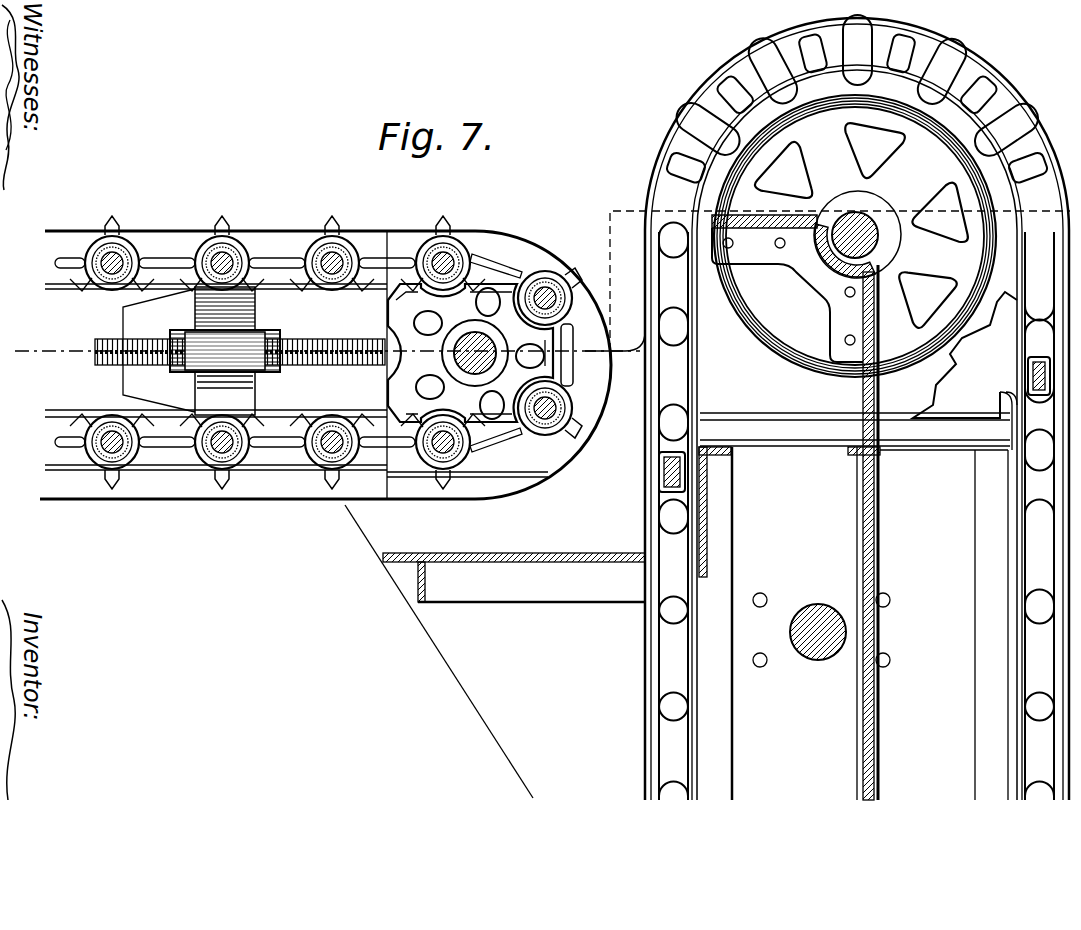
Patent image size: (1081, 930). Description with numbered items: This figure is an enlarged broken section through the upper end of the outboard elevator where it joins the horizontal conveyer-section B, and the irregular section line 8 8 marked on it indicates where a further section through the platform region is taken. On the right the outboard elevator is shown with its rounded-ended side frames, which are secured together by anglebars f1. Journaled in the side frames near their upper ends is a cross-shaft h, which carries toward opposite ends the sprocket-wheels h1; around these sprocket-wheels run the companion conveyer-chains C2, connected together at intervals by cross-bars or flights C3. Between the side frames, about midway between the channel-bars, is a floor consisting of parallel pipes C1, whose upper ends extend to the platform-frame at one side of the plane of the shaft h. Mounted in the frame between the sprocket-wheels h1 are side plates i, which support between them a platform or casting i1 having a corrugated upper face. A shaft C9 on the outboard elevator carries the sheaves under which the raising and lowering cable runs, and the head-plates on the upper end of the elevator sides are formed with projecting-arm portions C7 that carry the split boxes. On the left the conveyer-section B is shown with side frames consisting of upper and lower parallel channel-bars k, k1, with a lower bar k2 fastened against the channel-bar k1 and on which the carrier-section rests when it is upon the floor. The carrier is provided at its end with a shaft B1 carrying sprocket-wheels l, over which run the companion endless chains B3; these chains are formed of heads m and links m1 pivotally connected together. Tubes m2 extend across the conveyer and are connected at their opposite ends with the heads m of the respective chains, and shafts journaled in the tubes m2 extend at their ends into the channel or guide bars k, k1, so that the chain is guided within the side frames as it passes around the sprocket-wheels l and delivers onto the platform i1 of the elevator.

The section line 8 8 is at (35, 325).
The conveyer-section B is at (307, 372).
The shaft B1 is at (478, 338).
The endless chains B3 is at (282, 442).
The upper channel-bar k is at (182, 228).
The lower channel-bar k1 is at (167, 458).
The lower bar k2 is at (88, 470).
The heads m is at (102, 238).
The links m1 is at (152, 253).
The tubes m2 is at (92, 252).
The sprocket-wheels l is at (390, 306).
The parallel pipes C1 is at (880, 540).
The conveyer-chains C2 is at (678, 363).
The cross-bars or flights C3 is at (662, 481).
The projecting-arm portions C7 is at (495, 651).
The shaft C9 is at (817, 657).
The cross-shaft h is at (880, 246).
The sprocket-wheels h1 is at (927, 377).
The side plates i is at (776, 377).
The platform or casting i1 is at (757, 232).
The anglebars f1 is at (870, 467).